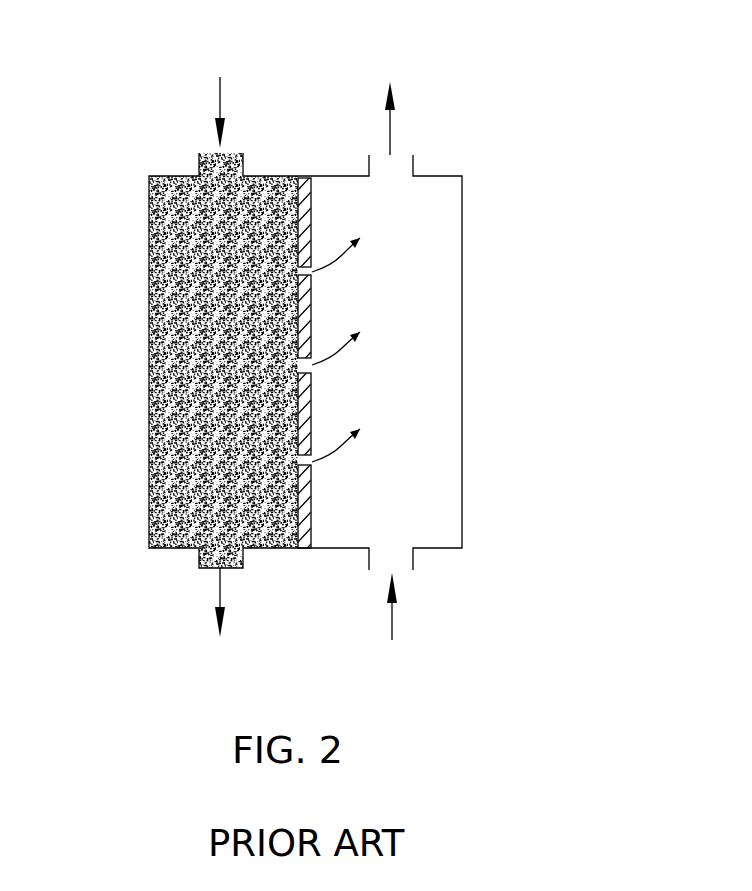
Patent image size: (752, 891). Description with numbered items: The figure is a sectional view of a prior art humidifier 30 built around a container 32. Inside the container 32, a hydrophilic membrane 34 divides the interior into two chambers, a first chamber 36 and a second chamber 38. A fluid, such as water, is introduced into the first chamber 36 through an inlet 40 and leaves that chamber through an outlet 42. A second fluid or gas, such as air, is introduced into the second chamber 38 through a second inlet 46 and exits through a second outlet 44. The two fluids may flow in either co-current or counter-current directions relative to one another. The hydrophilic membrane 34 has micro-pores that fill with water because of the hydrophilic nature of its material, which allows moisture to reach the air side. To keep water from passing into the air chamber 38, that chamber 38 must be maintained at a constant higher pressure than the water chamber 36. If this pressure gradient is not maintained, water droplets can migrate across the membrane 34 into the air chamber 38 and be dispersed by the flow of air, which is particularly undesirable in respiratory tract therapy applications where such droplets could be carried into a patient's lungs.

The prior art humidifier 30 is at (306, 335).
The container 32 is at (462, 297).
The hydrophilic membrane 34 is at (311, 402).
The chamber 36 is at (185, 450).
The chamber 38 is at (438, 253).
The inlet 40 is at (232, 157).
The outlet 42 is at (203, 568).
The second outlet 44 is at (398, 167).
The second inlet 46 is at (405, 557).